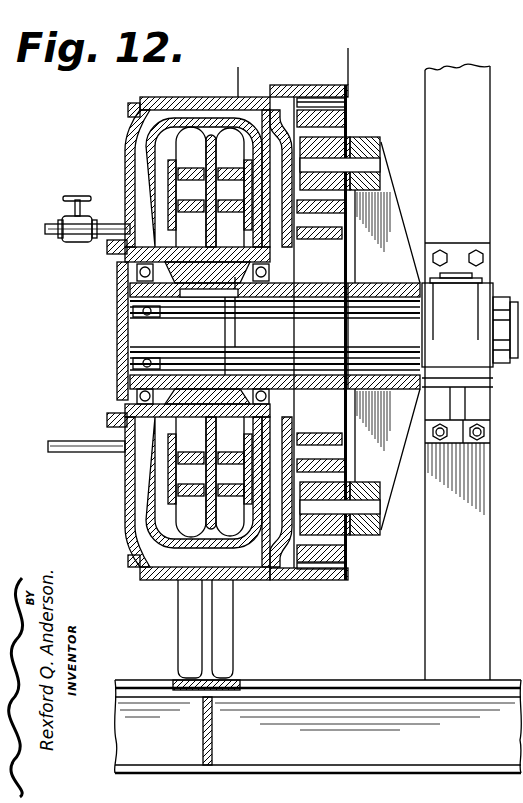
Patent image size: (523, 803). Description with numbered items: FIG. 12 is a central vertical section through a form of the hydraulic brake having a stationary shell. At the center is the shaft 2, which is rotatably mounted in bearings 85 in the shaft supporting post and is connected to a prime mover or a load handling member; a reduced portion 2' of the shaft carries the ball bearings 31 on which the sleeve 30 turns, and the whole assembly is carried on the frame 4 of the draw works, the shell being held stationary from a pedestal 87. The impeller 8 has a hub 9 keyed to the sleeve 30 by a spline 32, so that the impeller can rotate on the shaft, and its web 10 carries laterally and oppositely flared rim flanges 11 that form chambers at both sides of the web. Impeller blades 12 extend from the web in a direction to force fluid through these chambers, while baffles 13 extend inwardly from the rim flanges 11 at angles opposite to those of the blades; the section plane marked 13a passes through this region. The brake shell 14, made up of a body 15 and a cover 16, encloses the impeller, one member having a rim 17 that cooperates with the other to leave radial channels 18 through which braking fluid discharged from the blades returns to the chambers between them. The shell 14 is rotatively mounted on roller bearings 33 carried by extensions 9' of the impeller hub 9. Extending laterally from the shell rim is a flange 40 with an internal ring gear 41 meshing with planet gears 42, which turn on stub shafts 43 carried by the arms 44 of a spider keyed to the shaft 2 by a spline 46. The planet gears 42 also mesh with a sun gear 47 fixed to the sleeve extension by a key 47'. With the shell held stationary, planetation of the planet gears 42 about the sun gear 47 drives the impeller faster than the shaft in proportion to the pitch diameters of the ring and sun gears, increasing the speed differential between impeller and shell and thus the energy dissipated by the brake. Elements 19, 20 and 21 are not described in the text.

The shaft 2 is at (473, 372).
The reduced portion of the shaft 2' is at (103, 331).
The frame 4 is at (370, 680).
The impeller 8 is at (162, 125).
The hub 9 is at (207, 257).
The extensions on the impeller hub 9' is at (159, 291).
The web 10 is at (163, 167).
The rim flanges 11 is at (157, 150).
The impeller blades 12 is at (187, 442).
The baffles 13 is at (356, 67).
The section line 13a is at (250, 83).
The brake shell 14 is at (143, 95).
The body 15 is at (262, 110).
The cover 16 is at (152, 120).
The rim 17 is at (200, 118).
The radial channels 18 is at (165, 186).
The pole piece 19 is at (190, 206).
The curved partition 20 is at (278, 150).
The lower casing wall 21 is at (140, 503).
The sleeve 30 is at (182, 303).
The ball bearings 31 is at (343, 303).
The spline 32 is at (237, 300).
The roller bearings 33 is at (132, 272).
The flange 40 is at (350, 88).
The internal ring gear 41 is at (349, 100).
The planet gears 42 is at (343, 125).
The stub shafts 43 is at (383, 143).
The arms 44 is at (393, 182).
The spline 46 is at (430, 300).
The sun gear 47 is at (377, 198).
The key 47' is at (341, 249).
The bearings 85 is at (500, 293).
The pedestal 87 is at (233, 622).